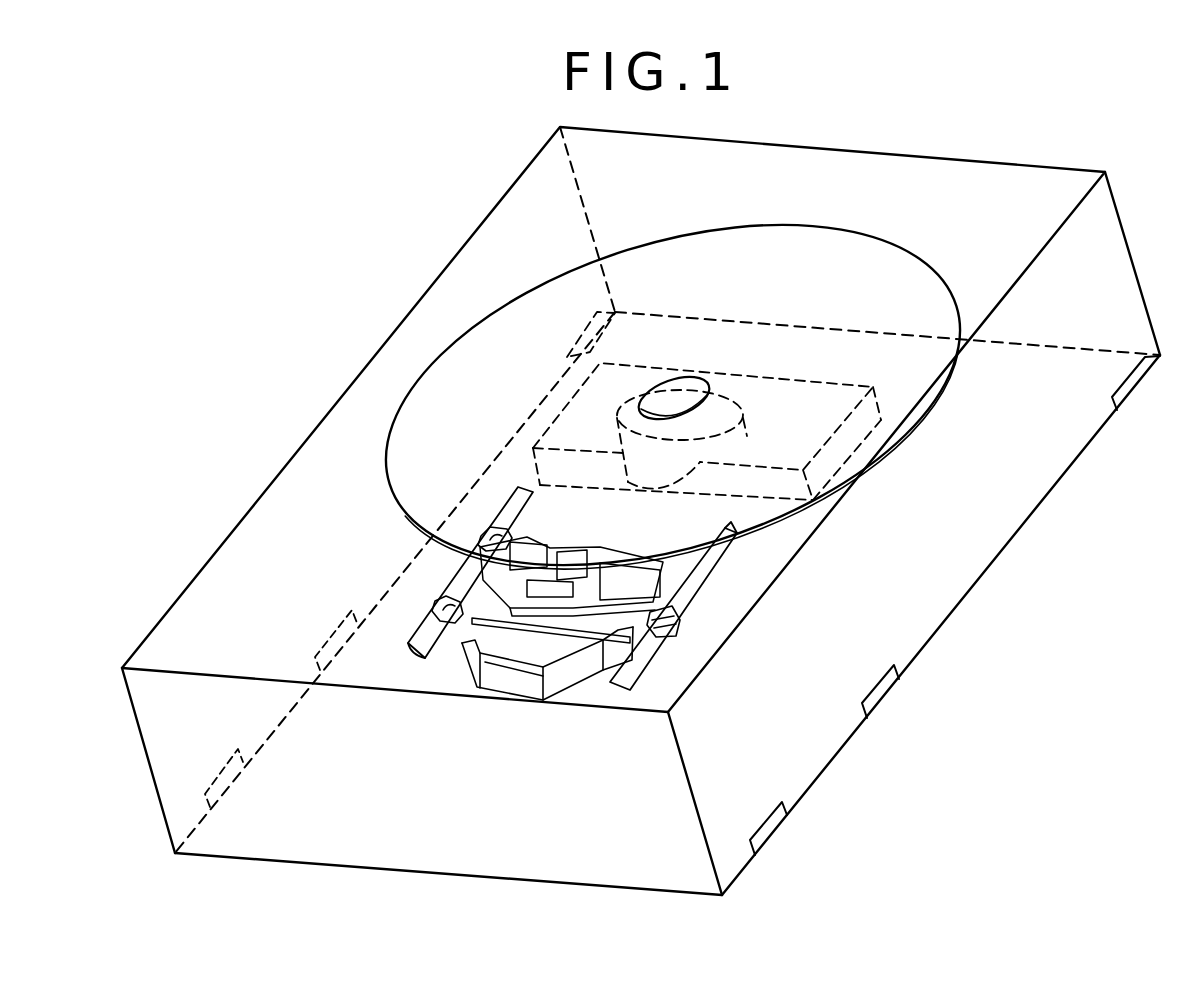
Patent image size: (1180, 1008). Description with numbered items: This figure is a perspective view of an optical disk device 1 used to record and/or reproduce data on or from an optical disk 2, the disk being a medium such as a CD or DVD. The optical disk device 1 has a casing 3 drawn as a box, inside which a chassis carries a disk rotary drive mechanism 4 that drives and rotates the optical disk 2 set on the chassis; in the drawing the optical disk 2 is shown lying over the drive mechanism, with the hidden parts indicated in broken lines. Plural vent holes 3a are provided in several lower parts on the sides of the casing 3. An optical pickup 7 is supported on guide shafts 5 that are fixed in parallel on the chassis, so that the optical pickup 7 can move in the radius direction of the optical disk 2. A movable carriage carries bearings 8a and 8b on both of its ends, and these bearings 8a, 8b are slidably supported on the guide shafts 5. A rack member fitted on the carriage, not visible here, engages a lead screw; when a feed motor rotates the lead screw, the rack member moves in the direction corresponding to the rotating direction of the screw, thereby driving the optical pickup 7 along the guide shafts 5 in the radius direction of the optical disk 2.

The optical disk device 1 is at (450, 197).
The optical disk 2 is at (422, 495).
The casing 3 is at (1013, 540).
The vent holes 3a is at (1125, 393).
The disk rotary drive mechanism 4 is at (733, 380).
The guide shafts 5 is at (517, 490).
The optical pickup 7 is at (465, 688).
The bearing 8a is at (487, 543).
The bearing 8b is at (673, 643).